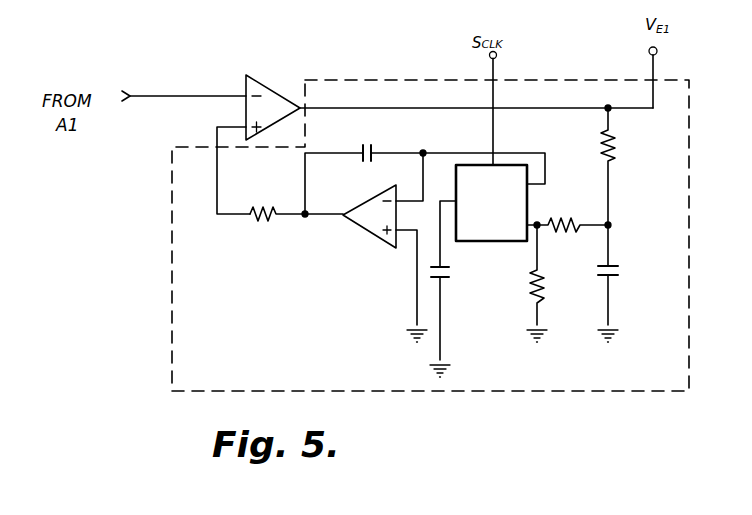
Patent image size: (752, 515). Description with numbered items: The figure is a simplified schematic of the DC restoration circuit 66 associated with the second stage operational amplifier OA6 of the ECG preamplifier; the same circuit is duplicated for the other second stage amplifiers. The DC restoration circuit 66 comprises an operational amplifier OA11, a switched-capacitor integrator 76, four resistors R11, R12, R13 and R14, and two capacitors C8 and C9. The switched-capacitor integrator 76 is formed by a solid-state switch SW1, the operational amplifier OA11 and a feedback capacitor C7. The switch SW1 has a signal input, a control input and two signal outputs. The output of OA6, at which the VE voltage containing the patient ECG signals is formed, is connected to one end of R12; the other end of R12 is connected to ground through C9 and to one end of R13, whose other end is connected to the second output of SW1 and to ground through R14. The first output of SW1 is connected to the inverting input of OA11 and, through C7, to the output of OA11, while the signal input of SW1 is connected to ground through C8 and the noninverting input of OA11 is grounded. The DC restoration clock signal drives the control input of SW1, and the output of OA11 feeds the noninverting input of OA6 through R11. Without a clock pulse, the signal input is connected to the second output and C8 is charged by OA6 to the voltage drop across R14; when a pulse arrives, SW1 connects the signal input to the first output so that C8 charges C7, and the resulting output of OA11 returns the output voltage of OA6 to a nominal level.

The DC restoration circuit 66 is at (352, 78).
The switched-capacitor integrator 76 is at (373, 247).
The second stage operational amplifier OA6 is at (273, 98).
The operational amplifier OA11 is at (365, 248).
The resistor R11 is at (274, 227).
The resistor R12 is at (627, 166).
The resistor R13 is at (567, 215).
The resistor R14 is at (552, 275).
The feedback capacitor C7 is at (363, 144).
The capacitor C8 is at (454, 281).
The capacitor C9 is at (621, 274).
The solid-state switch SW1 is at (515, 246).